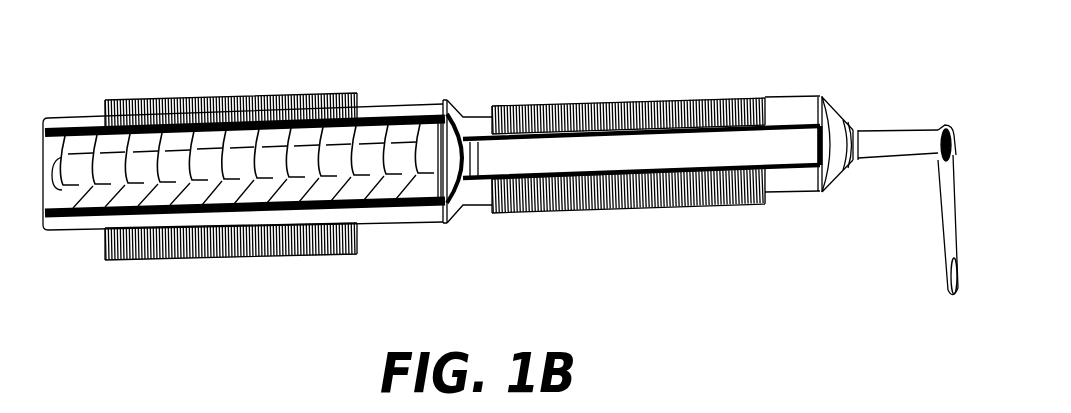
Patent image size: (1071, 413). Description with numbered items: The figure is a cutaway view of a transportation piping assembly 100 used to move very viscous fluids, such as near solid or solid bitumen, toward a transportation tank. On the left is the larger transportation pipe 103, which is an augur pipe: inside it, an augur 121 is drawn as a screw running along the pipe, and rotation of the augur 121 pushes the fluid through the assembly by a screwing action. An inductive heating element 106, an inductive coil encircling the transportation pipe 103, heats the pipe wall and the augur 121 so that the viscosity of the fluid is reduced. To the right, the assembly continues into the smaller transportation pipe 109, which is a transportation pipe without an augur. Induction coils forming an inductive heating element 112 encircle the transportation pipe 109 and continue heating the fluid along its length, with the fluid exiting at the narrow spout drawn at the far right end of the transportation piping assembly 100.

The transportation piping assembly 100 is at (143, 63).
The transportation pipe 103 is at (433, 218).
The inductive heating element 106 is at (303, 253).
The transportation pipe 109 is at (782, 183).
The inductive heating element 112 is at (580, 213).
The augur 121 is at (372, 122).